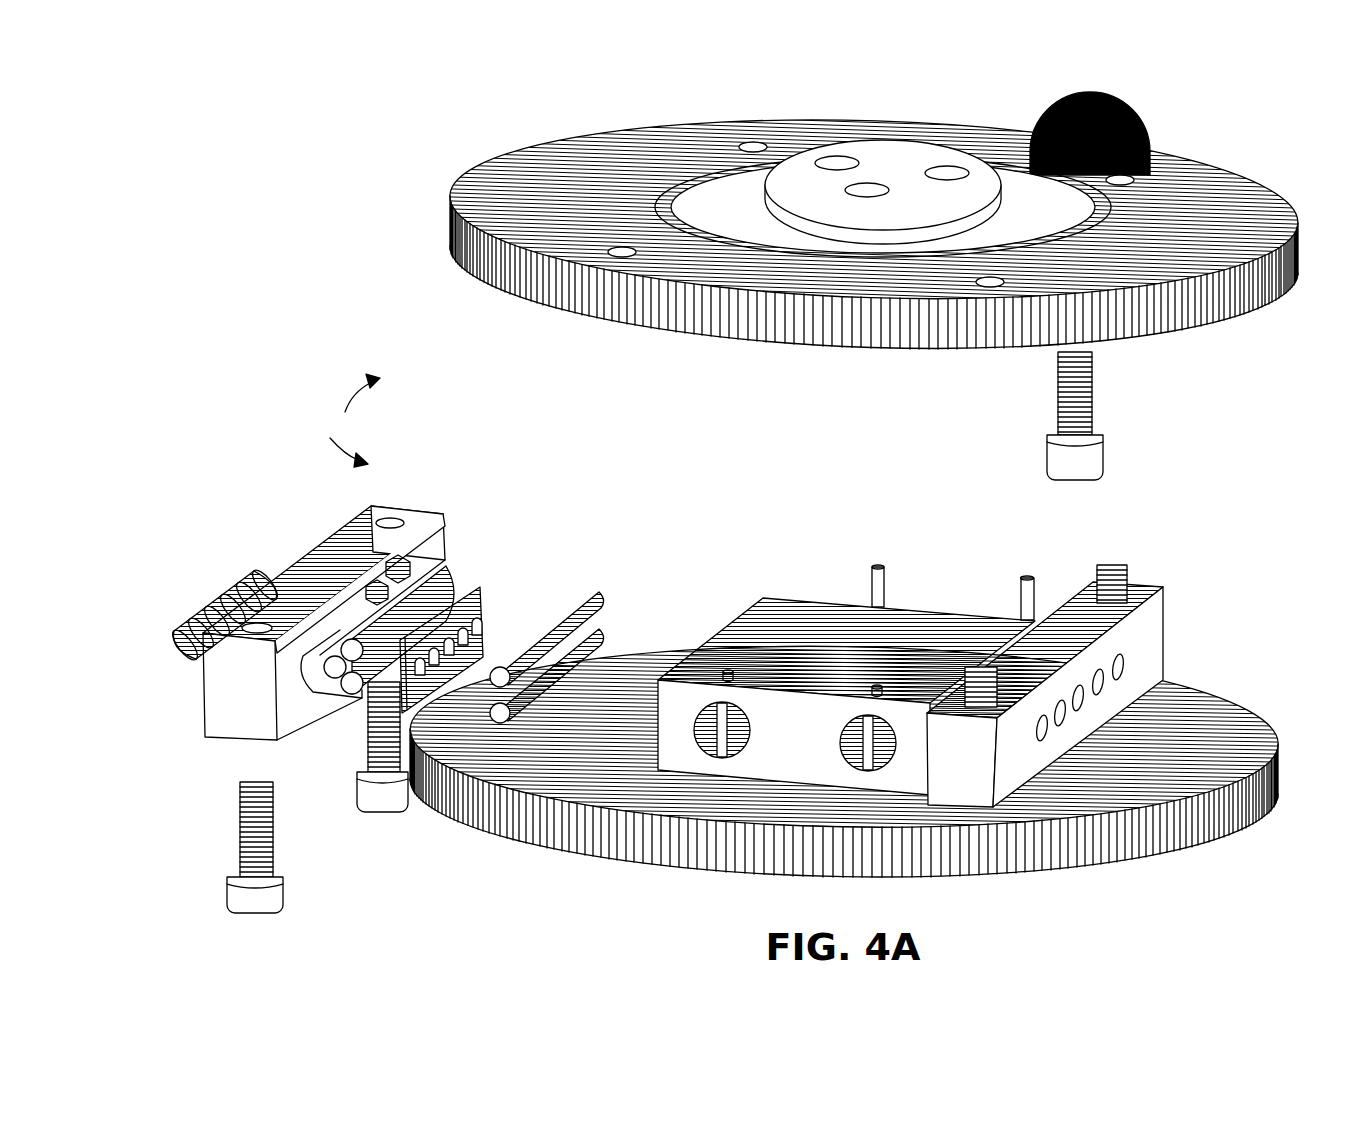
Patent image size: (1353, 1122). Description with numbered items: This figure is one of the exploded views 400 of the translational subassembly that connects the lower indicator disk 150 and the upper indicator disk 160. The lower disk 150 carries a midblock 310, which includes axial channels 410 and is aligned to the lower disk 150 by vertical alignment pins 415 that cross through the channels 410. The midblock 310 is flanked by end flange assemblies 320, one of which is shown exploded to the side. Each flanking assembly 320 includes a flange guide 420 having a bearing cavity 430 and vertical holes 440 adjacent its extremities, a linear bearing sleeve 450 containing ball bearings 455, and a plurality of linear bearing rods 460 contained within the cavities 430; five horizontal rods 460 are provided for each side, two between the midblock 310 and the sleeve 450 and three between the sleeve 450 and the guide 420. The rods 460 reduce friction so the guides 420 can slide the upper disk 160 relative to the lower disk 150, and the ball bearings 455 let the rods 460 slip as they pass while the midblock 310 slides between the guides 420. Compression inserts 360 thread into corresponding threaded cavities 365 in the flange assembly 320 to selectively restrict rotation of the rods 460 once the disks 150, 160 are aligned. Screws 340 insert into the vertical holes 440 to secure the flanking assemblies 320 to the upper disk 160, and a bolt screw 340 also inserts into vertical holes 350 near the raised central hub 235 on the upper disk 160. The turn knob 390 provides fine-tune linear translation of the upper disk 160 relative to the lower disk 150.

The lower indicator disk 150 is at (1235, 705).
The upper indicator disk 160 is at (632, 330).
The central hub 235 is at (888, 148).
The midblock 310 is at (805, 597).
The end flange assemblies 320 is at (1147, 590).
The vertical hexagonal bolt screw 340 is at (1095, 448).
The vertical holes 350 is at (745, 146).
The compression inserts 360 is at (237, 583).
The threaded cavities 365 is at (1123, 664).
The turn knob 390 is at (1130, 108).
The exploded views 400 is at (317, 643).
The axial channels 410 is at (703, 738).
The vertical alignment pins 415 is at (1027, 578).
The flange guide 420 is at (222, 737).
The bearing cavity 430 is at (347, 610).
The vertical holes 440 is at (392, 520).
The linear bearing sleeve 450 is at (478, 585).
The ball bearings 455 is at (483, 623).
The linear bearing rods 460 is at (594, 598).